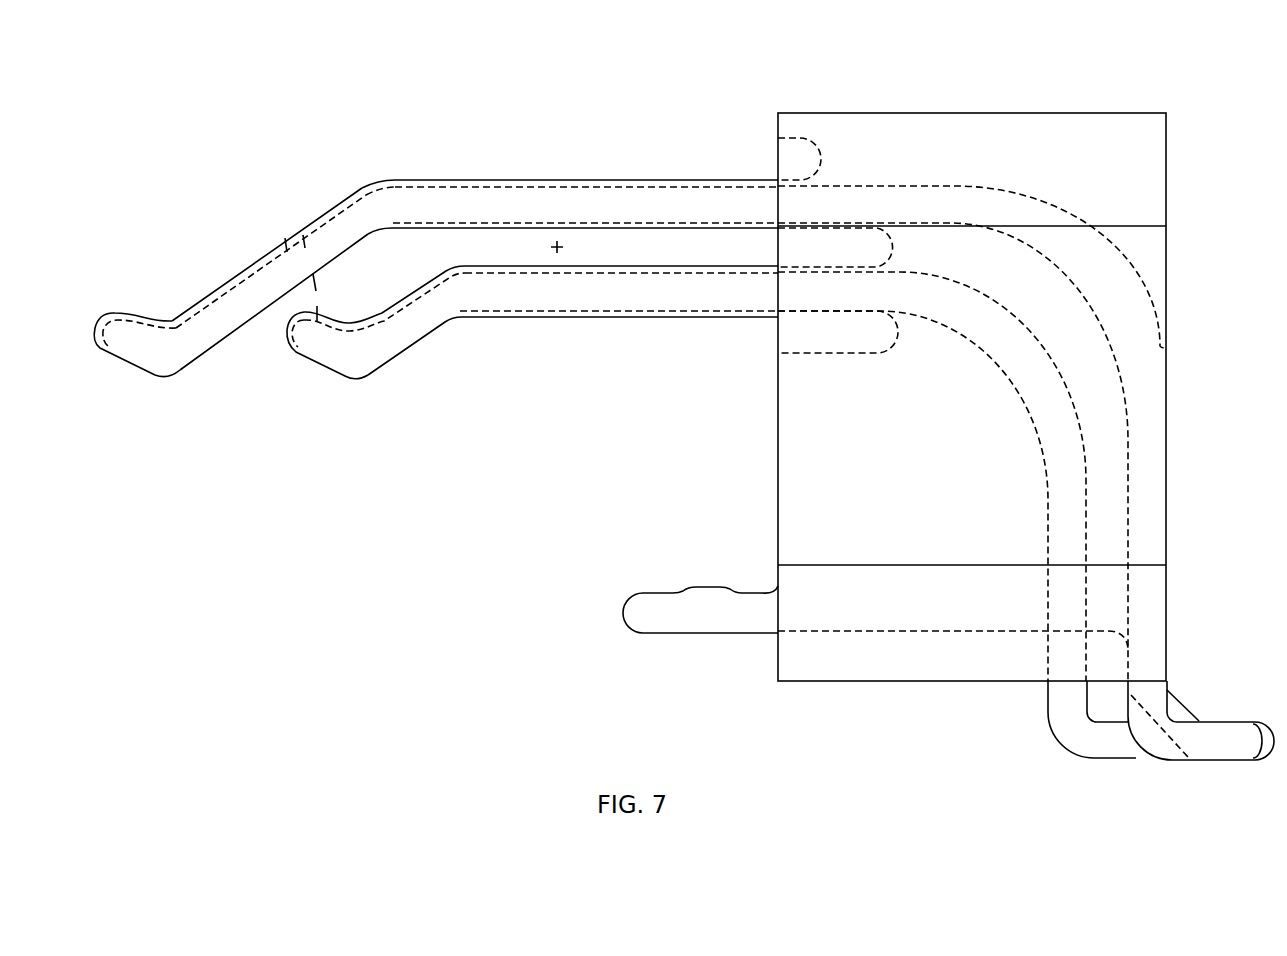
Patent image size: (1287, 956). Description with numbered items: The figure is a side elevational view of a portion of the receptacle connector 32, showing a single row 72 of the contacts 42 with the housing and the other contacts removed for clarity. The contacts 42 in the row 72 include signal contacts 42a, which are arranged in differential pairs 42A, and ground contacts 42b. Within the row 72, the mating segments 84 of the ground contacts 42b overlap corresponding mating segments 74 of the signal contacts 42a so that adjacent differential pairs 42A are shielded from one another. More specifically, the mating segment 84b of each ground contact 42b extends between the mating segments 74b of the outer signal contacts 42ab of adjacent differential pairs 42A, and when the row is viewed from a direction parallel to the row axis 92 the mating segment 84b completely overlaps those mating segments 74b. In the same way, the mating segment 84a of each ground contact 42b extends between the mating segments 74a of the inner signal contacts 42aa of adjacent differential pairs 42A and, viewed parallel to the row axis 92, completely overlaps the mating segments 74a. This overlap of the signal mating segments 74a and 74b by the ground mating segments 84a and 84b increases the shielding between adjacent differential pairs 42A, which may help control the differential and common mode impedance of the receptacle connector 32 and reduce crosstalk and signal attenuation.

The receptacle connector 32 is at (1053, 77).
The row 72 is at (290, 124).
The row axis 92 is at (557, 243).
The contacts 42 is at (279, 264).
The signal contacts 42a is at (130, 318).
The ground contacts 42b is at (304, 358).
The differential pairs 42A is at (292, 219).
The inner signal contacts 42aa is at (378, 316).
The outer signal contacts 42ab is at (389, 178).
The mating segments 84 is at (585, 248).
The mating segment 84a is at (625, 318).
The mating segment 84b is at (607, 180).
The mating segments 74 is at (585, 249).
The mating segments 74a is at (718, 318).
The mating segments 74b is at (723, 182).